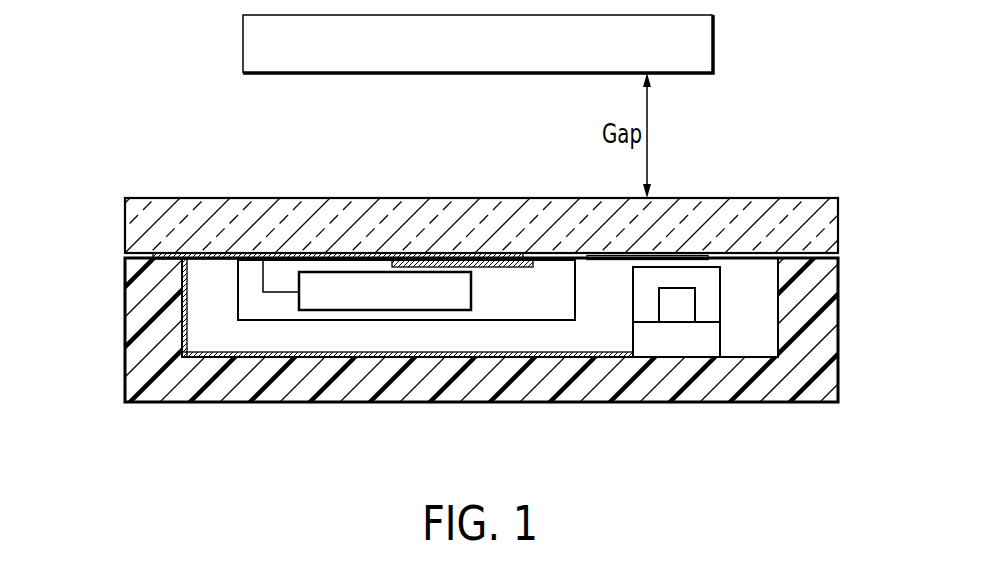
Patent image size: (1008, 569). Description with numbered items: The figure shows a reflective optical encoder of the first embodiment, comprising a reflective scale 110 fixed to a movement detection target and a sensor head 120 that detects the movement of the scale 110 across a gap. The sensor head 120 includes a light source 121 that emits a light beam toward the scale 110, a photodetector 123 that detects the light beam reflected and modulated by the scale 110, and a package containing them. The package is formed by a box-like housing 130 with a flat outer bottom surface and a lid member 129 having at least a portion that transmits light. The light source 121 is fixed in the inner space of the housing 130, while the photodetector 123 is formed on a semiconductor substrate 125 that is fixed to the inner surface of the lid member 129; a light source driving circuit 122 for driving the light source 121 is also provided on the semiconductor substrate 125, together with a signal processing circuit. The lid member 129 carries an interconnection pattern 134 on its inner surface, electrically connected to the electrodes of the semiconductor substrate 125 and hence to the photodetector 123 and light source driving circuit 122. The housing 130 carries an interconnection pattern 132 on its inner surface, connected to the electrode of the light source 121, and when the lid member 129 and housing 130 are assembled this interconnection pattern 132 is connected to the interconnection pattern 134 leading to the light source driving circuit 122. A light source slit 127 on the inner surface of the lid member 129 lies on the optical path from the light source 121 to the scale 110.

The reflective scale 110 is at (703, 43).
The sensor head 120 is at (104, 212).
The light source 121 is at (717, 340).
The light source driving circuit 122 is at (407, 310).
The photodetector 123 is at (500, 267).
The semiconductor substrate 125 is at (333, 320).
The light source slit 127 is at (693, 255).
The lid member 129 is at (770, 207).
The housing 130 is at (155, 330).
The interconnection pattern 132 is at (250, 358).
The interconnection pattern 134 is at (190, 255).